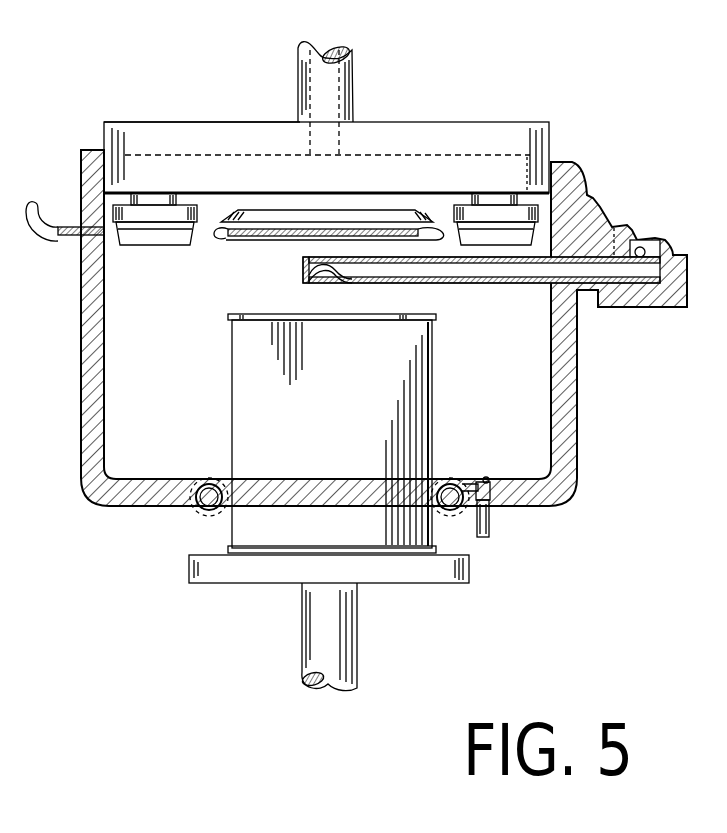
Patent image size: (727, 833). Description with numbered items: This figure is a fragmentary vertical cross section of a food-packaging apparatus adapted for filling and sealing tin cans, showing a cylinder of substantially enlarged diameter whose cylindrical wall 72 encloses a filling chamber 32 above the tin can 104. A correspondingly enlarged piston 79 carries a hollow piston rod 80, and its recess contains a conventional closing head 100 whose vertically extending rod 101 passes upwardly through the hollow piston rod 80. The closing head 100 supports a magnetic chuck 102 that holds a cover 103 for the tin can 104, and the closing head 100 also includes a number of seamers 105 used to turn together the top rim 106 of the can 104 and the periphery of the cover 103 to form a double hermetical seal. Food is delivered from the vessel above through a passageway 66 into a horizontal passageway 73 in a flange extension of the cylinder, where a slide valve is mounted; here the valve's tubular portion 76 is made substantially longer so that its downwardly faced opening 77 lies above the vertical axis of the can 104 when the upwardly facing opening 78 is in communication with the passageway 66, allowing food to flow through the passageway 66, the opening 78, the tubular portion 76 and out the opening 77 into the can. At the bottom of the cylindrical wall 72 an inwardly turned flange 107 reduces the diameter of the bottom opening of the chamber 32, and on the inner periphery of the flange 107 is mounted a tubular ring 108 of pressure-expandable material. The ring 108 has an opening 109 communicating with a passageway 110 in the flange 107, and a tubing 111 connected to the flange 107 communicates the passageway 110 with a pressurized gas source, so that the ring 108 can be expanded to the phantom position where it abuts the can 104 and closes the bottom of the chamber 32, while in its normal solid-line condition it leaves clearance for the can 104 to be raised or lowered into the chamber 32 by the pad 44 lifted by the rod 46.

The filling chamber 32 is at (155, 413).
The pad 44 is at (432, 586).
The rod 46 is at (359, 644).
The passageway 66 is at (640, 262).
The cylindrical wall 72 is at (82, 196).
The horizontal passageway 73 is at (676, 306).
The tubular portion 76 is at (592, 300).
The downwardly faced opening 77 is at (347, 282).
The upwardly facing opening 78 is at (641, 308).
The piston 79 is at (157, 122).
The piston rod 80 is at (354, 104).
The closing head 100 is at (414, 155).
The rod 101 is at (335, 48).
The magnetic chuck 102 is at (404, 224).
The cover 103 is at (268, 236).
The tin can 104 is at (232, 373).
The seamers 105 is at (163, 246).
The top rim 106 is at (228, 322).
The inwardly turned flange 107 is at (132, 506).
The tubular ring 108 is at (214, 484).
The opening 109 is at (464, 485).
The passageway 110 is at (490, 505).
The tubing 111 is at (490, 538).